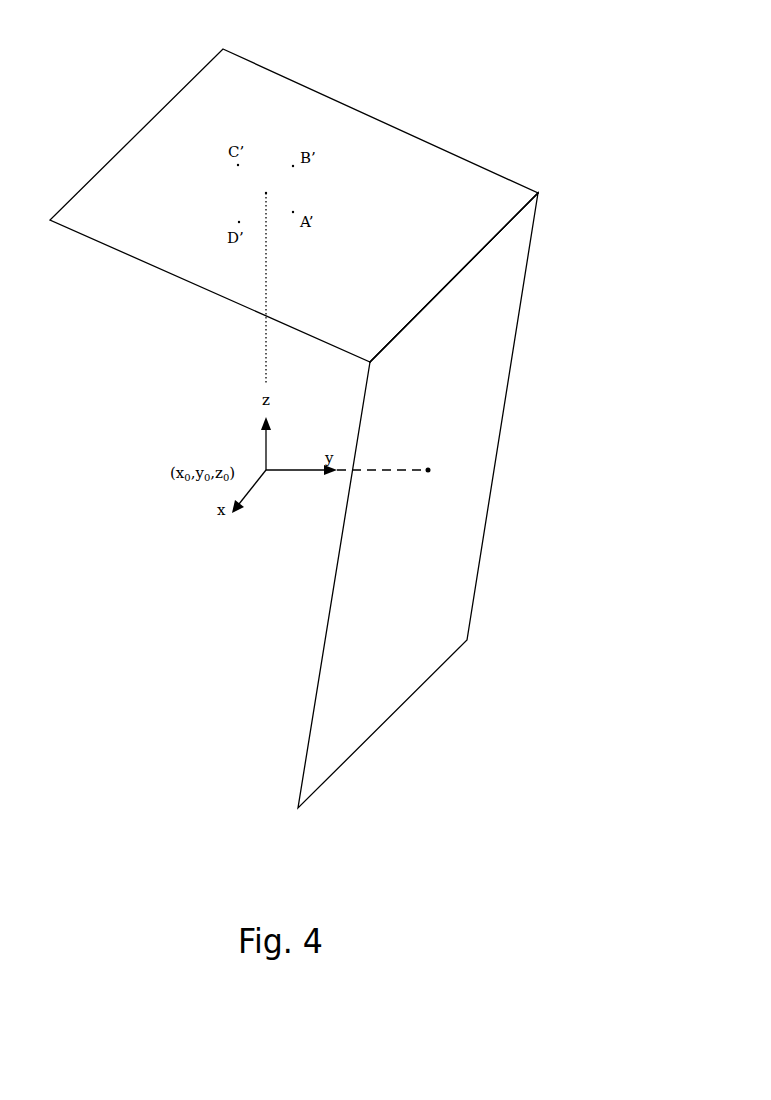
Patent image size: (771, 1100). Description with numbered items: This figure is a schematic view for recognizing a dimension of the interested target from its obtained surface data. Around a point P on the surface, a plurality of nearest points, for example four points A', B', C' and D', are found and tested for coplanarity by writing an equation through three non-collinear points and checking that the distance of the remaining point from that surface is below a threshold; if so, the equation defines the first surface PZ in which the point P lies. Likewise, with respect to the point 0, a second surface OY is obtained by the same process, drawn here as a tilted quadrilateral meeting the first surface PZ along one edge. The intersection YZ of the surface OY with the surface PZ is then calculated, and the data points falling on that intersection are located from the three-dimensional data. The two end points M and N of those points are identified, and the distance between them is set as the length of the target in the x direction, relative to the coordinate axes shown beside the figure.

The plane PZ is at (238, 82).
The plane OY is at (471, 442).
The intersection line YZ is at (472, 262).
The end point M is at (370, 350).
The end point N is at (526, 194).
The point P is at (275, 286).
The point 0 is at (400, 469).